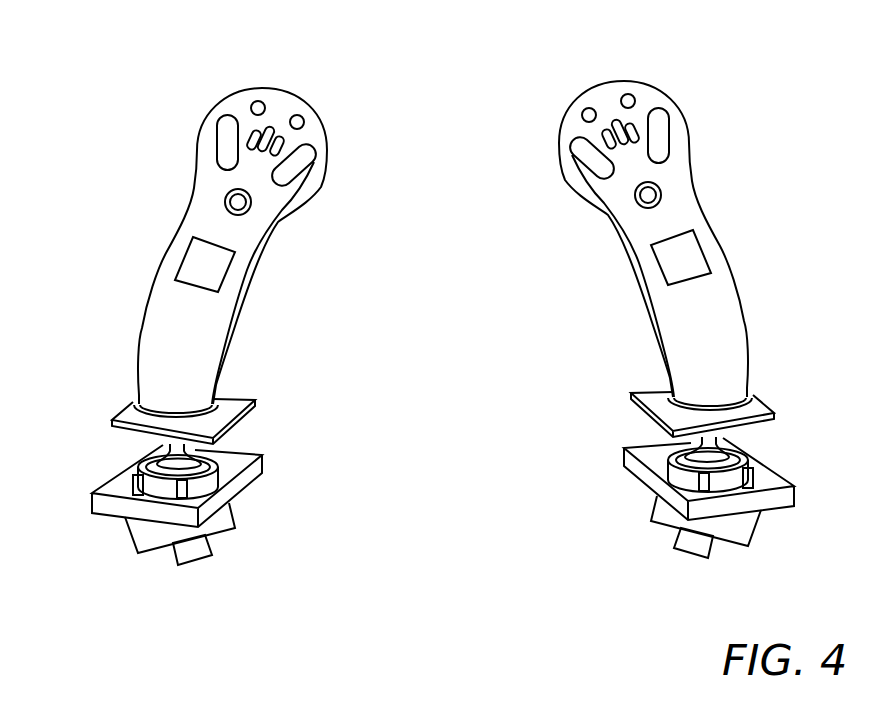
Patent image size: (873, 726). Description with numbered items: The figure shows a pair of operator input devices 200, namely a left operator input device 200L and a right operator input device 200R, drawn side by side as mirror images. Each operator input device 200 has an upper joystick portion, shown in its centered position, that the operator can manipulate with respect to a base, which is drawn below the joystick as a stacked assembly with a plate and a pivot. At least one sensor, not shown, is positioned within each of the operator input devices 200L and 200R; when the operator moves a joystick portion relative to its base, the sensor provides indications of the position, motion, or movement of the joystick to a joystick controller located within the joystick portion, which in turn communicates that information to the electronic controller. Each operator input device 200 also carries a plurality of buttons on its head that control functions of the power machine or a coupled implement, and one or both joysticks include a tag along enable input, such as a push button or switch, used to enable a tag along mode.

The operator input device 200 is at (445, 310).
The left operator input device 200L is at (247, 314).
The right operator input device 200R is at (641, 307).